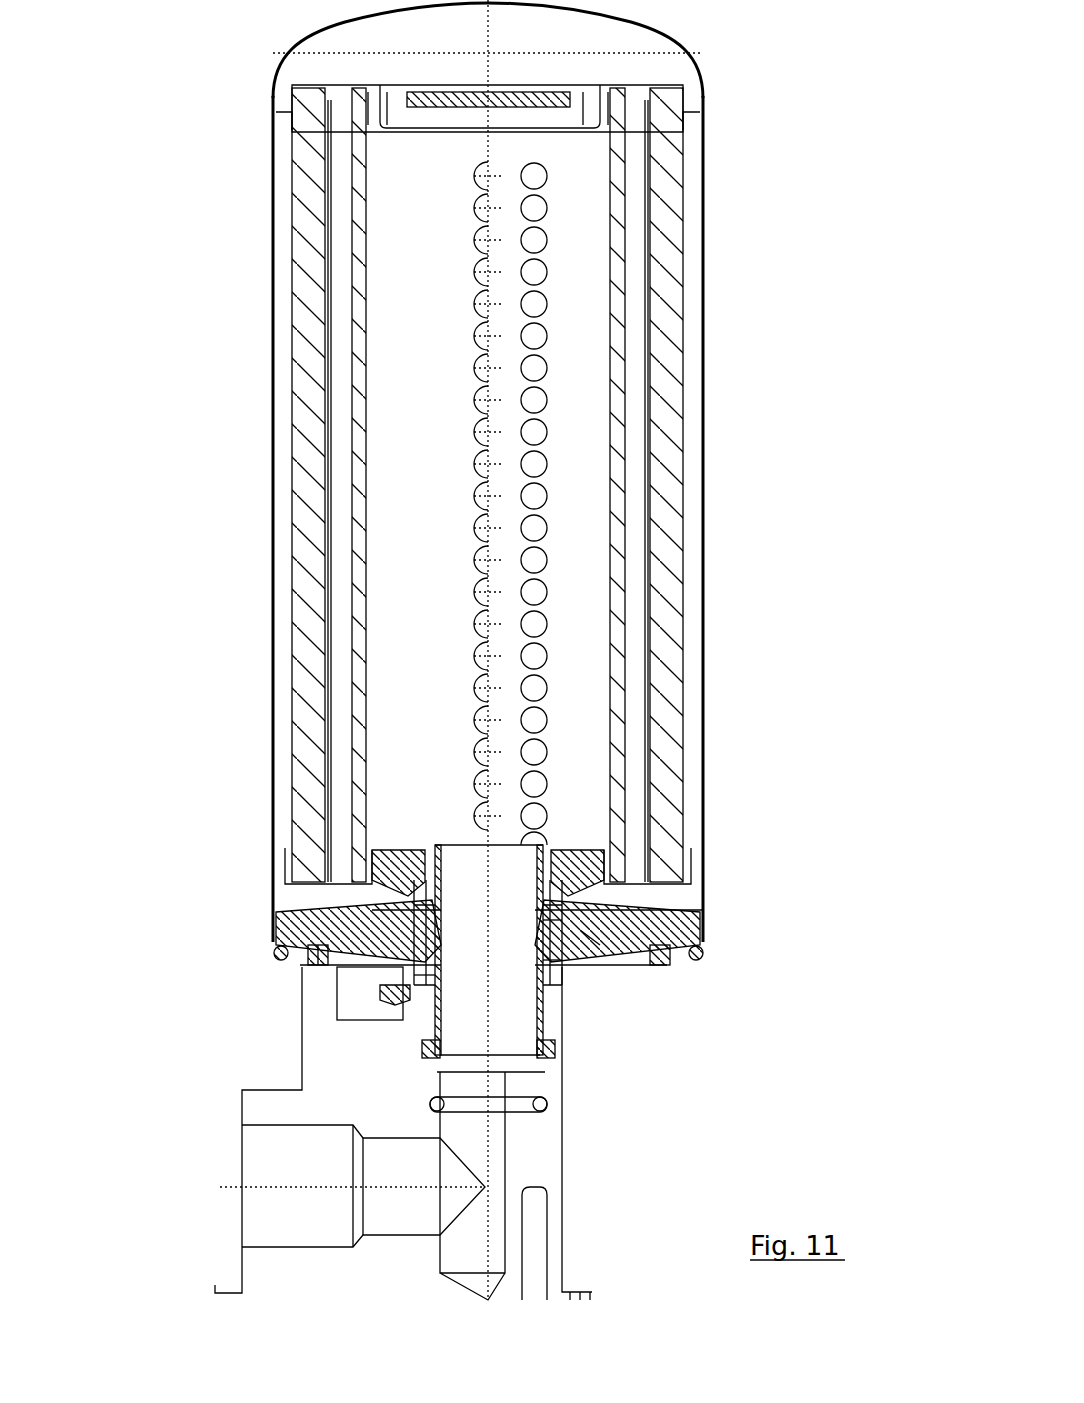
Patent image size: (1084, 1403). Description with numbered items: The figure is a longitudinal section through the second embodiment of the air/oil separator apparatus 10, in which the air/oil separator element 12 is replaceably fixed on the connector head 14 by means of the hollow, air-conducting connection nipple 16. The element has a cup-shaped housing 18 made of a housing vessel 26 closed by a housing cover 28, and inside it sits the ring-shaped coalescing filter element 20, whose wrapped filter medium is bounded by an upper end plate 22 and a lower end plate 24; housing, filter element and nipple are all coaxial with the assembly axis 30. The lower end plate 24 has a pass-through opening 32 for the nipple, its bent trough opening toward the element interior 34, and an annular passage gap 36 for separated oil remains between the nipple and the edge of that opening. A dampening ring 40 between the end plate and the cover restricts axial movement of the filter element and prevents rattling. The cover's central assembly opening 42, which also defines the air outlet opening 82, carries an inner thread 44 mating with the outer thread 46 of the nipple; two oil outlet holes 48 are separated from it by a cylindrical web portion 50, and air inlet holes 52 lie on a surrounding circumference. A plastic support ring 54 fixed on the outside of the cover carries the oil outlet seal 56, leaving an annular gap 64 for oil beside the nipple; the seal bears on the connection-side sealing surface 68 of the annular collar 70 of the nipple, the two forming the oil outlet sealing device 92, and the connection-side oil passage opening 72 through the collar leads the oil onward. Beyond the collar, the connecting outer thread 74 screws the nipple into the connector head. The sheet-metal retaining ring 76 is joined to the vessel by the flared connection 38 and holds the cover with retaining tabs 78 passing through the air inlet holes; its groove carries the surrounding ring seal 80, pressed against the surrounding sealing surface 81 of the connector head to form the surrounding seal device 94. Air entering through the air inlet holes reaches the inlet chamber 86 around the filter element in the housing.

The air/oil separator apparatus 10 is at (237, 68).
The air/oil separator element 12 is at (268, 198).
The connector head 14 is at (300, 1038).
The connection nipple 16 is at (457, 850).
The housing 18 is at (275, 300).
The filter element 20 is at (300, 435).
The upper end plate 22 is at (683, 88).
The lower end plate 24 is at (700, 868).
The housing vessel 26 is at (705, 262).
The housing cover 28 is at (290, 935).
The assembly axis 30 is at (490, 148).
The pass-through opening 32 is at (427, 868).
The element interior 34 is at (444, 383).
The passage gap 36 is at (551, 870).
The flared connection 38 is at (695, 955).
The dampening ring 40 is at (575, 922).
The assembly opening 42 is at (560, 888).
The inner thread 44 is at (545, 925).
The outer thread 46 is at (420, 948).
The oil outlet holes 48 is at (580, 937).
The web portion 50 is at (560, 908).
The air inlet holes 52 is at (350, 930).
The support ring 54 is at (420, 975).
The oil outlet seal 56 is at (580, 978).
The annular gap 64 is at (553, 962).
The connection-side sealing surface 68 is at (565, 985).
The annular collar 70 is at (395, 1000).
The connection-side oil passage opening 72 is at (415, 1000).
The connecting outer thread 74 is at (556, 1055).
The retaining ring 76 is at (690, 962).
The retaining tabs 78 is at (345, 925).
The surrounding ring seal 80 is at (322, 968).
The surrounding sealing surface 81 is at (327, 968).
The air outlet opening 82 is at (471, 935).
The inlet chamber 86 is at (690, 890).
The oil outlet sealing device 92 is at (565, 1000).
The surrounding seal device 94 is at (300, 968).